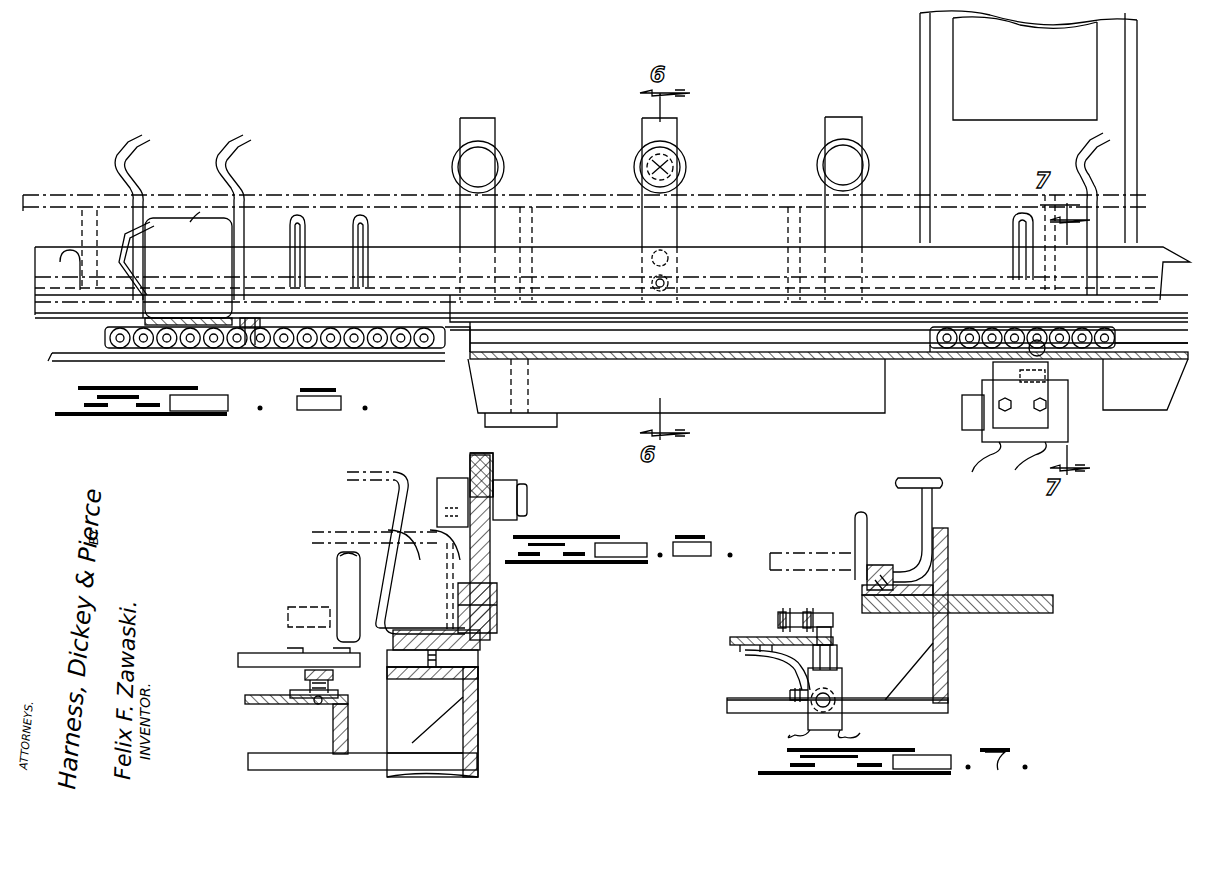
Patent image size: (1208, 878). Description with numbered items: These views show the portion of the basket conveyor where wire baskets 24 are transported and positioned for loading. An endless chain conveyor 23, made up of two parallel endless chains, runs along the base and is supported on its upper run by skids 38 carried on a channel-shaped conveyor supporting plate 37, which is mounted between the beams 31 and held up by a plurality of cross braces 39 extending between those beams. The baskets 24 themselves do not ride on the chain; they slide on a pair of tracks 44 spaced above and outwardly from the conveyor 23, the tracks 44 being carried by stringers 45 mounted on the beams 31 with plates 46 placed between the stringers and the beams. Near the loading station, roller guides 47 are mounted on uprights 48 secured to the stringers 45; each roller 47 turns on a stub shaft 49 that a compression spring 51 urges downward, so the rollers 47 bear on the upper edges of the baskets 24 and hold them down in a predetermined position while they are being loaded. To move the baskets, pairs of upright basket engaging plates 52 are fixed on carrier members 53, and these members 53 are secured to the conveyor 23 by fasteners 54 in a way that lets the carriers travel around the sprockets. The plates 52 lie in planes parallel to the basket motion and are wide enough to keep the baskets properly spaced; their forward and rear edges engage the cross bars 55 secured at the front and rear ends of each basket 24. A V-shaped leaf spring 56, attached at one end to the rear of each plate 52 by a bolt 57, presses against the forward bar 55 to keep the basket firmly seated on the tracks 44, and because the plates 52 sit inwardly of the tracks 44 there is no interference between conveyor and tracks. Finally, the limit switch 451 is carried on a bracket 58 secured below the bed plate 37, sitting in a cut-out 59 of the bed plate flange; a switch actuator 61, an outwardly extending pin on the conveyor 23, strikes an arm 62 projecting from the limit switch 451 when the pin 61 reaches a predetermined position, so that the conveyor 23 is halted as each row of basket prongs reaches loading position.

In FIG. 5, the endless chain conveyor 23 is at (360, 343).
In FIG. 6, the endless chain conveyor 23 is at (335, 692).
In FIG. 7, the endless chain conveyor 23 is at (785, 612).
In FIG. 5, the wire basket 24 is at (398, 190).
In FIG. 6, the wire basket 24 is at (385, 447).
In FIG. 7, the wire basket 24 is at (812, 561).
In FIG. 6, the beam 31 is at (478, 690).
In FIG. 7, the beam 31 is at (948, 640).
In FIG. 5, the conveyor supporting plate 37 is at (700, 362).
In FIG. 6, the conveyor supporting plate 37 is at (268, 703).
In FIG. 7, the conveyor supporting plate 37 is at (755, 637).
In FIG. 6, the skid 38 is at (305, 682).
In FIG. 5, the cross brace 39 is at (550, 427).
In FIG. 6, the cross brace 39 is at (248, 762).
In FIG. 7, the cross brace 39 is at (880, 713).
In FIG. 5, the track 44 is at (135, 302).
In FIG. 6, the track 44 is at (405, 620).
In FIG. 7, the track 44 is at (888, 565).
In FIG. 6, the stringer 45 is at (492, 642).
In FIG. 7, the stringer 45 is at (950, 560).
In FIG. 6, the plate 46 is at (480, 658).
In FIG. 5, the roller guide 47 is at (500, 158).
In FIG. 6, the roller guide 47 is at (448, 478).
In FIG. 5, the upright 48 is at (490, 130).
In FIG. 6, the upright 48 is at (492, 574).
In FIG. 6, the stub shaft 49 is at (500, 505).
In FIG. 6, the compression spring 51 is at (494, 475).
In FIG. 5, the basket engaging plate 52 is at (233, 240).
In FIG. 6, the basket engaging plate 52 is at (337, 568).
In FIG. 5, the carrier member 53 is at (175, 318).
In FIG. 6, the carrier member 53 is at (255, 653).
In FIG. 5, the fastener 54 is at (255, 340).
In FIG. 5, the cross bar 55 is at (78, 280).
In FIG. 5, the V-shaped leaf spring 56 is at (125, 240).
In FIG. 5, the bolt 57 is at (190, 220).
In FIG. 7, the bracket 58 is at (795, 650).
In FIG. 7, the cut-out 59 is at (838, 660).
In FIG. 7, the switch actuator pin 61 is at (818, 613).
In FIG. 7, the arm 62 is at (832, 640).
In FIG. 5, the switch bracket 451 is at (1000, 390).
In FIG. 7, the switch bracket 451 is at (842, 682).